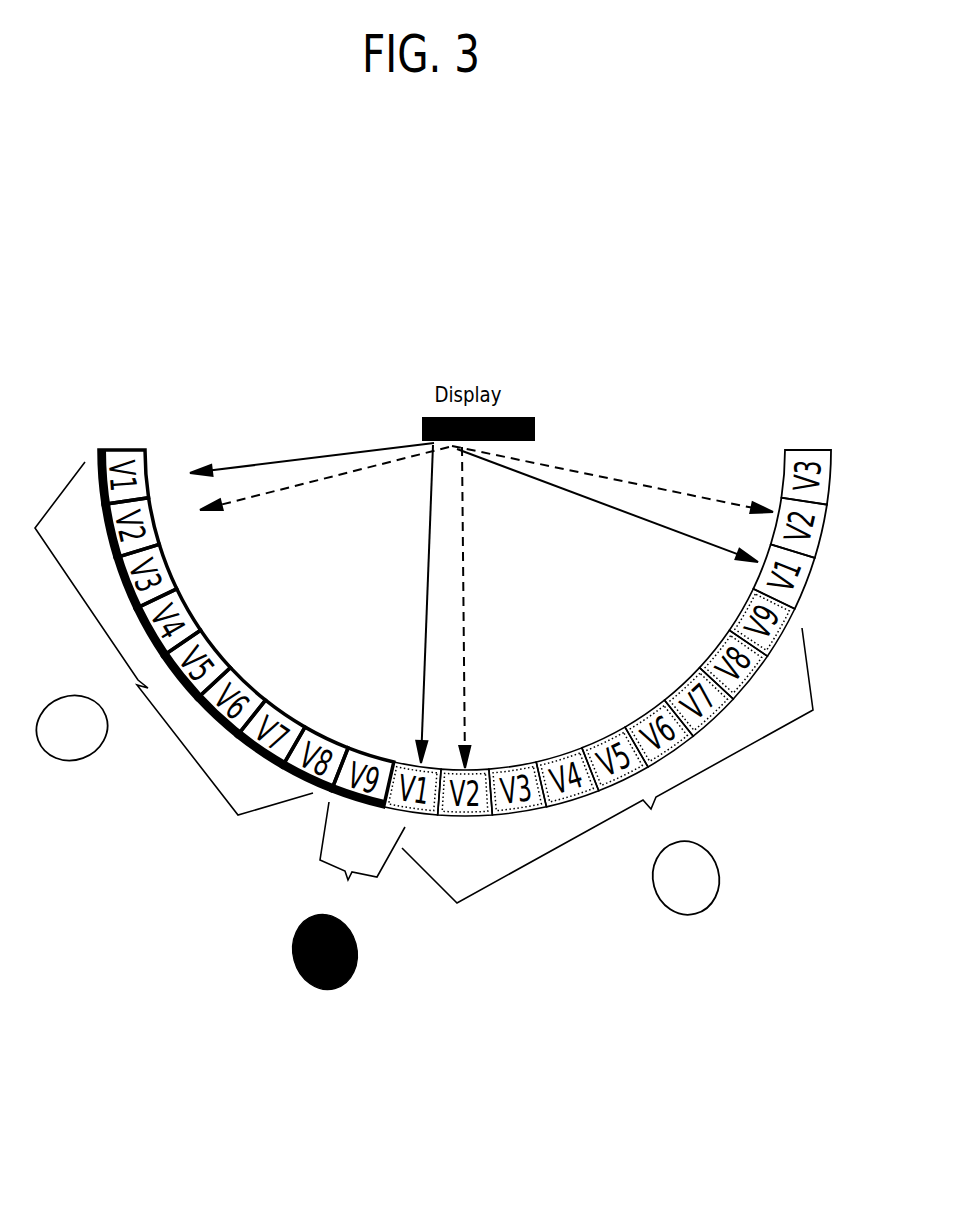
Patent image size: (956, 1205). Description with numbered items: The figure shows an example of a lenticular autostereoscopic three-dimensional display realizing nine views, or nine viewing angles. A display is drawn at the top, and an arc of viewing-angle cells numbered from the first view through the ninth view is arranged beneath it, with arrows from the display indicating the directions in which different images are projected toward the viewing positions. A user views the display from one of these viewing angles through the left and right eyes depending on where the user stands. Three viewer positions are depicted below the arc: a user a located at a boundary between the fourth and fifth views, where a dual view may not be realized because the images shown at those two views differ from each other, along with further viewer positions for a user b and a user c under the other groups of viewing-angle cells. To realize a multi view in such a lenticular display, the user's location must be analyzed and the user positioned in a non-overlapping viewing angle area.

The user a is at (124, 697).
The viewer at position b is at (342, 895).
The viewer at position c is at (658, 824).